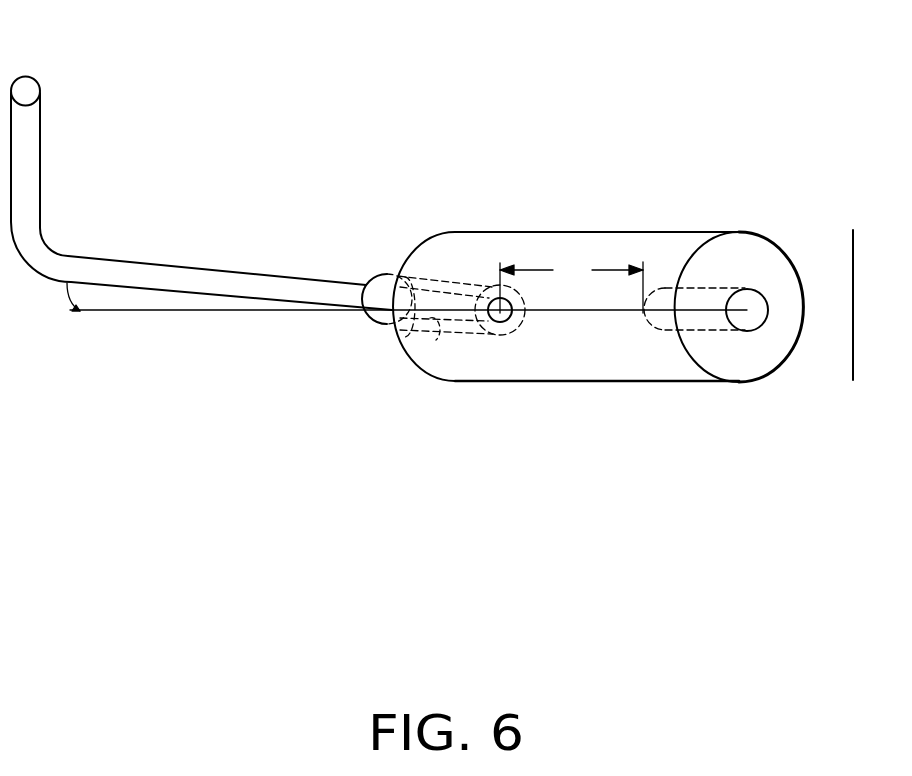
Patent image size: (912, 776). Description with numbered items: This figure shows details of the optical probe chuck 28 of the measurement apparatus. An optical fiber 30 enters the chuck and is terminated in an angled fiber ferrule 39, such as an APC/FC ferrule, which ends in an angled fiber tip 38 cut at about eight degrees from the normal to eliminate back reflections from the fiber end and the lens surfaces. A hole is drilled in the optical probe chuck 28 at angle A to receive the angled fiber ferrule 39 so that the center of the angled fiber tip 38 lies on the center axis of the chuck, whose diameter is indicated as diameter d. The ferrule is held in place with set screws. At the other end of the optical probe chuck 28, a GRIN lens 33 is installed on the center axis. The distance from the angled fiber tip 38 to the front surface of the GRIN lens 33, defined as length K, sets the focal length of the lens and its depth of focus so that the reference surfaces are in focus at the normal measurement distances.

The optical fiber 30 is at (30, 77).
The angle A is at (116, 302).
The optical probe chuck 28 is at (527, 233).
The angled fiber ferrule 39 is at (400, 340).
The angled fiber tip 38 is at (514, 321).
The length K is at (571, 283).
The GRIN lens 33 is at (718, 290).
The diameter d is at (866, 305).